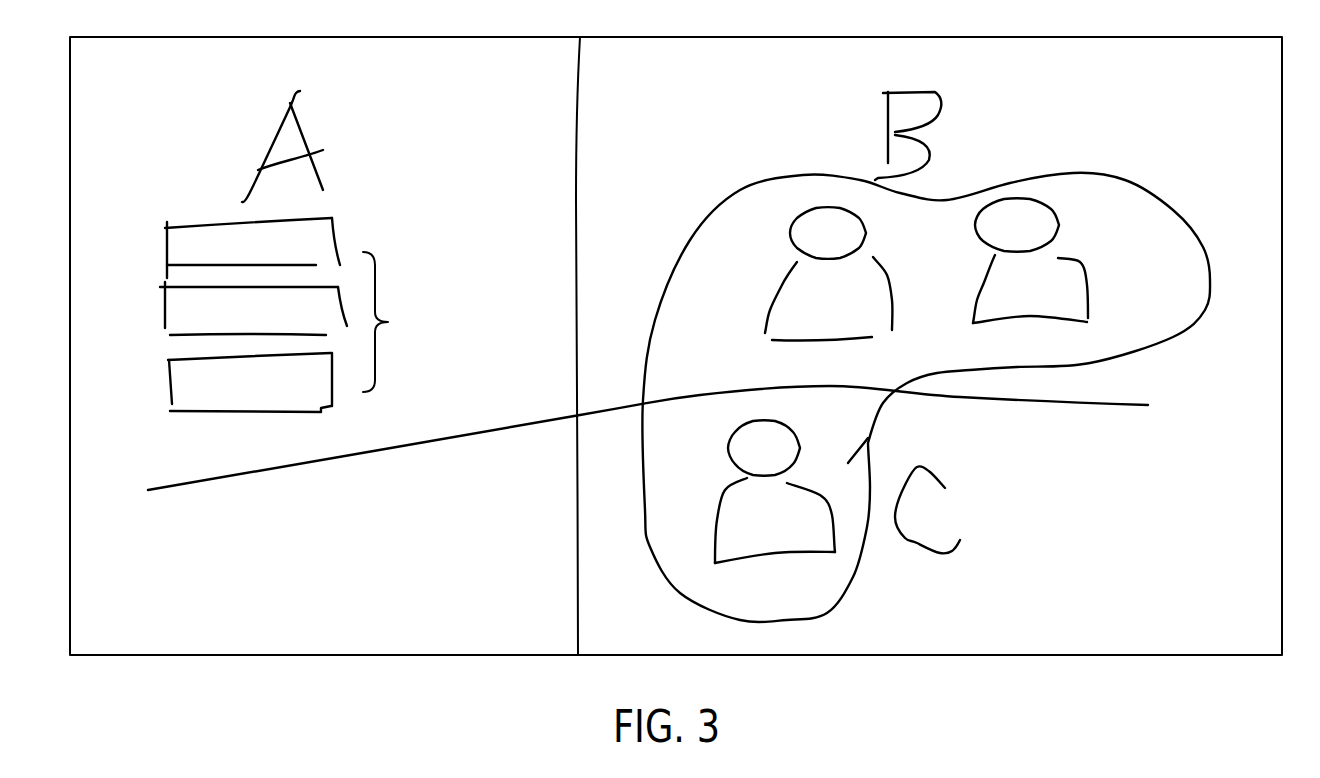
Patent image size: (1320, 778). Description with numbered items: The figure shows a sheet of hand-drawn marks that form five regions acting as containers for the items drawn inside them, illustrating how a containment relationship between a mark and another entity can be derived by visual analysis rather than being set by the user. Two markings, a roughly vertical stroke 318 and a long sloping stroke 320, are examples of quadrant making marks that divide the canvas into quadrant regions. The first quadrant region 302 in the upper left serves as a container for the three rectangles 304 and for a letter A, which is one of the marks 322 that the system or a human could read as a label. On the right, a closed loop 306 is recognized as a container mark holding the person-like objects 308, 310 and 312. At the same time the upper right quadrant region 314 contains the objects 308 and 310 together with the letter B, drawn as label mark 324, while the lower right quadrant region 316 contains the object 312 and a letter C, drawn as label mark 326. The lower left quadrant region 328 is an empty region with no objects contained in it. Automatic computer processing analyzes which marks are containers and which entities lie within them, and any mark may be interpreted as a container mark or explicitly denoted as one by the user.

The first quadrant region 302 is at (396, 172).
The three rectangles 304 is at (291, 315).
The container mark 306 is at (1175, 210).
The object 308 is at (1093, 300).
The object 310 is at (775, 303).
The object 312 is at (718, 510).
The quadrant region 314 is at (1104, 136).
The quadrant region 316 is at (1071, 529).
The quadrant making mark 318 is at (580, 210).
The quadrant making mark 320 is at (443, 442).
The label mark 322 is at (305, 140).
The label mark 324 is at (895, 110).
The label mark 326 is at (930, 556).
The quadrant region 328 is at (258, 544).